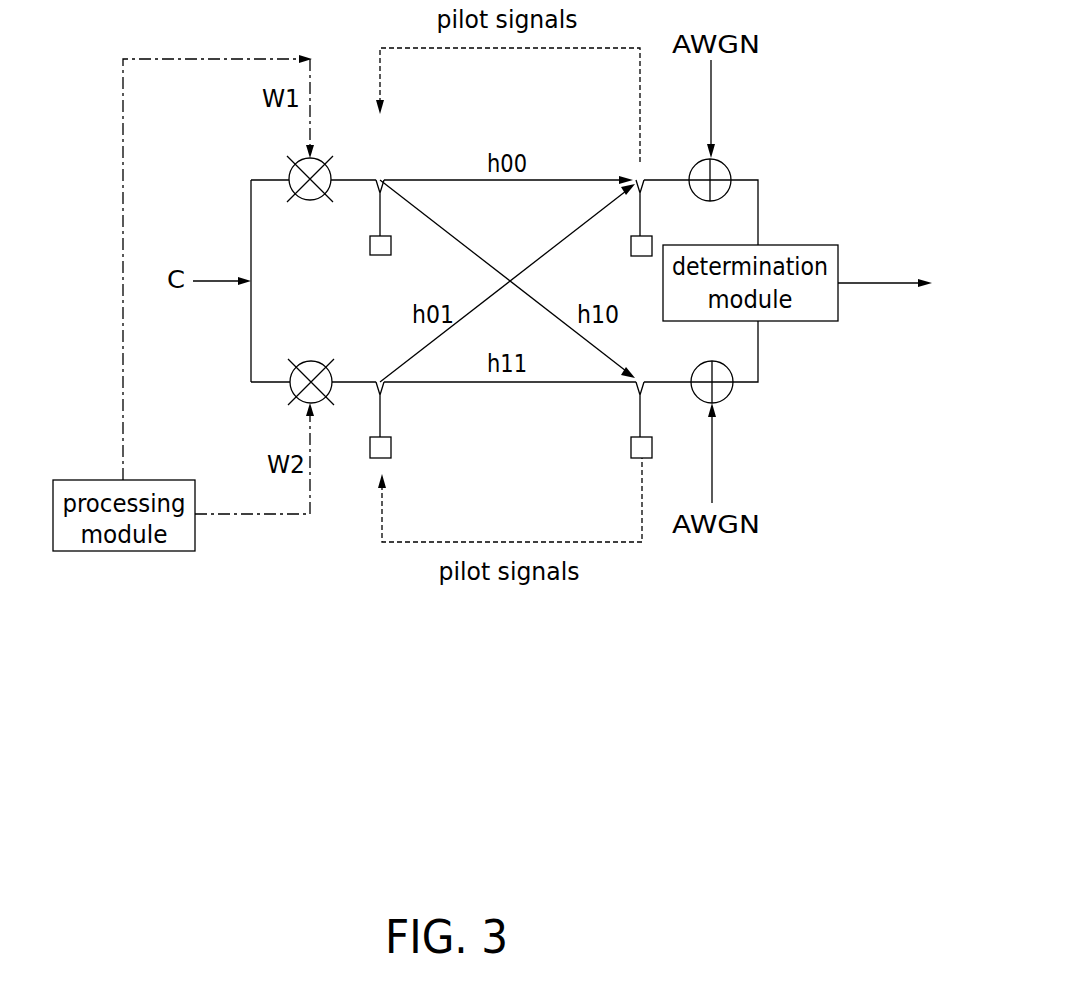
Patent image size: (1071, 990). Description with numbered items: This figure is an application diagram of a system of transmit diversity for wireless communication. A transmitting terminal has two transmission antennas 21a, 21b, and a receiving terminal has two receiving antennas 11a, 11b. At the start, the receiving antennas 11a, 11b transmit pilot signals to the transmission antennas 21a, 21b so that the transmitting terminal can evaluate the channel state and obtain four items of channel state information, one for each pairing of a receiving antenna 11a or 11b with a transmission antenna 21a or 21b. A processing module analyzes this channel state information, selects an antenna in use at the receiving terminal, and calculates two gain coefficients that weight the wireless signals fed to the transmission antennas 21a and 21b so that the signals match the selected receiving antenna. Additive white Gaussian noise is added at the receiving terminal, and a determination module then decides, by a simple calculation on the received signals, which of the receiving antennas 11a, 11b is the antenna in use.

The transmission antenna 21a is at (380, 256).
The transmission antenna 21b is at (383, 437).
The receiving antenna 11a is at (638, 256).
The receiving antenna 11b is at (637, 437).